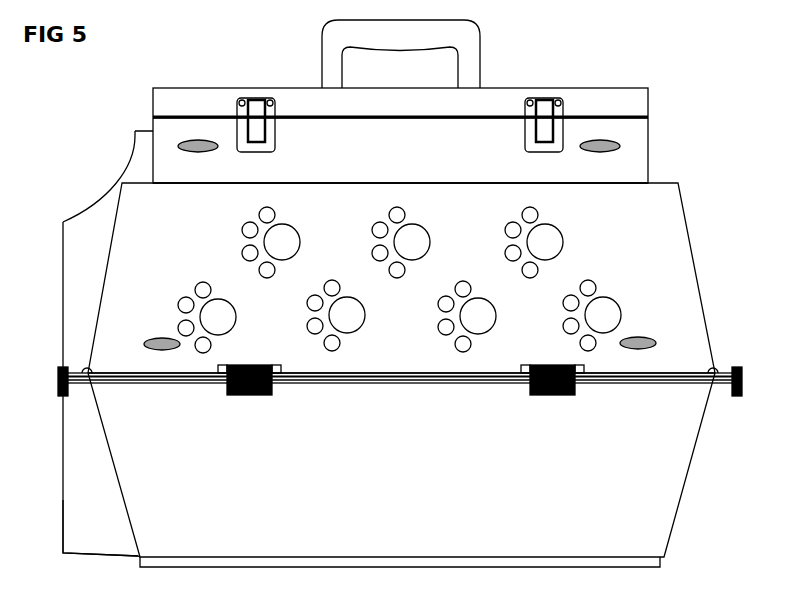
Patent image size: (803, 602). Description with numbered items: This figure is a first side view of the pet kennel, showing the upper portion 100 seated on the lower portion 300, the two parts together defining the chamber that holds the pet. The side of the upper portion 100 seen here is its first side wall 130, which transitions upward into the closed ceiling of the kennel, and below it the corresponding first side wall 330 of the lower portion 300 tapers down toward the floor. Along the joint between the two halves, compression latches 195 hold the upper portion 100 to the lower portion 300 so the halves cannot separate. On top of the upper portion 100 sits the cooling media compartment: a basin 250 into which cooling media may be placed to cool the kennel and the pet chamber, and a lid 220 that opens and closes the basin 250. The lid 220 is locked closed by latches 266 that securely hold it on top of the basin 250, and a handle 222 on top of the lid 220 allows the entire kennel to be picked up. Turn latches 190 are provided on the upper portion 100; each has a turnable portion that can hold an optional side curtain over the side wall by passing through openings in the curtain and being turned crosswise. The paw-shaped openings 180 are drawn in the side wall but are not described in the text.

The upper portion 100 is at (685, 285).
The first side wall 130 is at (684, 341).
The paw-shaped ventilation openings 180 is at (545, 242).
The turn latches 190 is at (183, 147).
The compression latches 195 is at (552, 397).
The lid 220 is at (615, 98).
The handle 222 is at (325, 35).
The basin 250 is at (640, 132).
The latches 266 is at (240, 100).
The lower portion 300 is at (678, 467).
The first side wall 330 is at (645, 520).